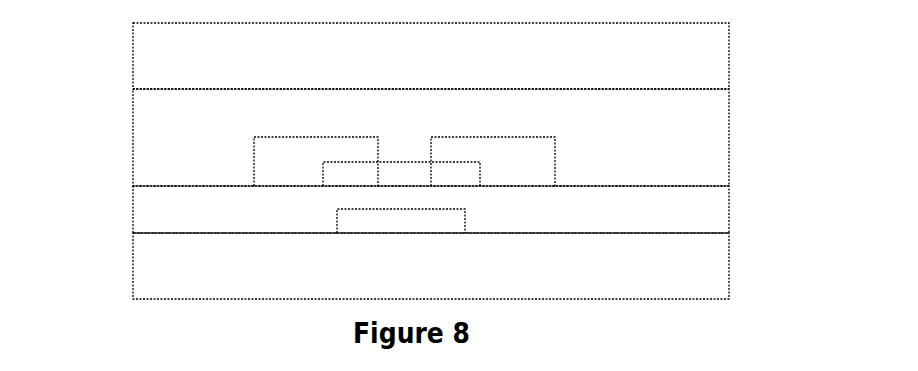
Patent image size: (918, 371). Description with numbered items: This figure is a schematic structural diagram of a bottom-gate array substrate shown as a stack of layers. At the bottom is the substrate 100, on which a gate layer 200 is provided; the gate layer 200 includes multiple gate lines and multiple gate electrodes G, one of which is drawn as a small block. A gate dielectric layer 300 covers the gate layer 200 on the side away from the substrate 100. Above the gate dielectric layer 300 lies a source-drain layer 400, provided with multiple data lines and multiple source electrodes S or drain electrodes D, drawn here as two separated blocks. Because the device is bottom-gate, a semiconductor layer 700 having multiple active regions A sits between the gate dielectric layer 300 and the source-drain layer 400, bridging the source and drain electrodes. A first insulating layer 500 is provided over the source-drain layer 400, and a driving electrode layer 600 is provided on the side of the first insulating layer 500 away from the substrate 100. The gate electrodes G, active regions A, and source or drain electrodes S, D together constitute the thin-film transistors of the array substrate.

The driving electrode layer 600 is at (730, 55).
The first insulating layer 500 is at (730, 120).
The gate dielectric layer 300 is at (730, 219).
The substrate 100 is at (730, 282).
The source-drain layer 400 is at (430, 140).
The semiconductor layer 700 is at (480, 177).
The gate layer 200 is at (337, 224).